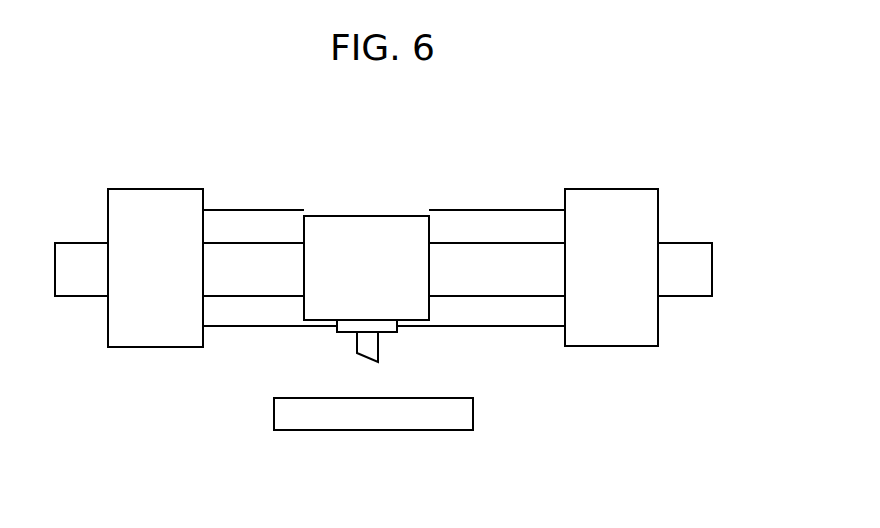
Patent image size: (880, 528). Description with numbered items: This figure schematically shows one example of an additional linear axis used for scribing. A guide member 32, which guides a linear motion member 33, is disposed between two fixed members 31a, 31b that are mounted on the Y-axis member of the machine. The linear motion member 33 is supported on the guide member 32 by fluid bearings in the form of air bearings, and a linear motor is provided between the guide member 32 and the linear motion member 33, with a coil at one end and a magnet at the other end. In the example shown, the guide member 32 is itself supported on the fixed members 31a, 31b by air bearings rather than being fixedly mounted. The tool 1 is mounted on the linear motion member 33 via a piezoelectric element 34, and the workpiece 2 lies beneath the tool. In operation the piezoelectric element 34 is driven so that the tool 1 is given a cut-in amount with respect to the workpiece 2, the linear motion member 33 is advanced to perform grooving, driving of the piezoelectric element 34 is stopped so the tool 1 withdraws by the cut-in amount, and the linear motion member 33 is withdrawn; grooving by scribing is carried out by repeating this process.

The fixed member 31a is at (129, 190).
The fixed member 31b is at (608, 189).
The guide member 32 is at (507, 252).
The linear motion member 33 is at (343, 217).
The piezoelectric element 34 is at (388, 332).
The tool 1 is at (359, 342).
The workpiece 2 is at (473, 412).